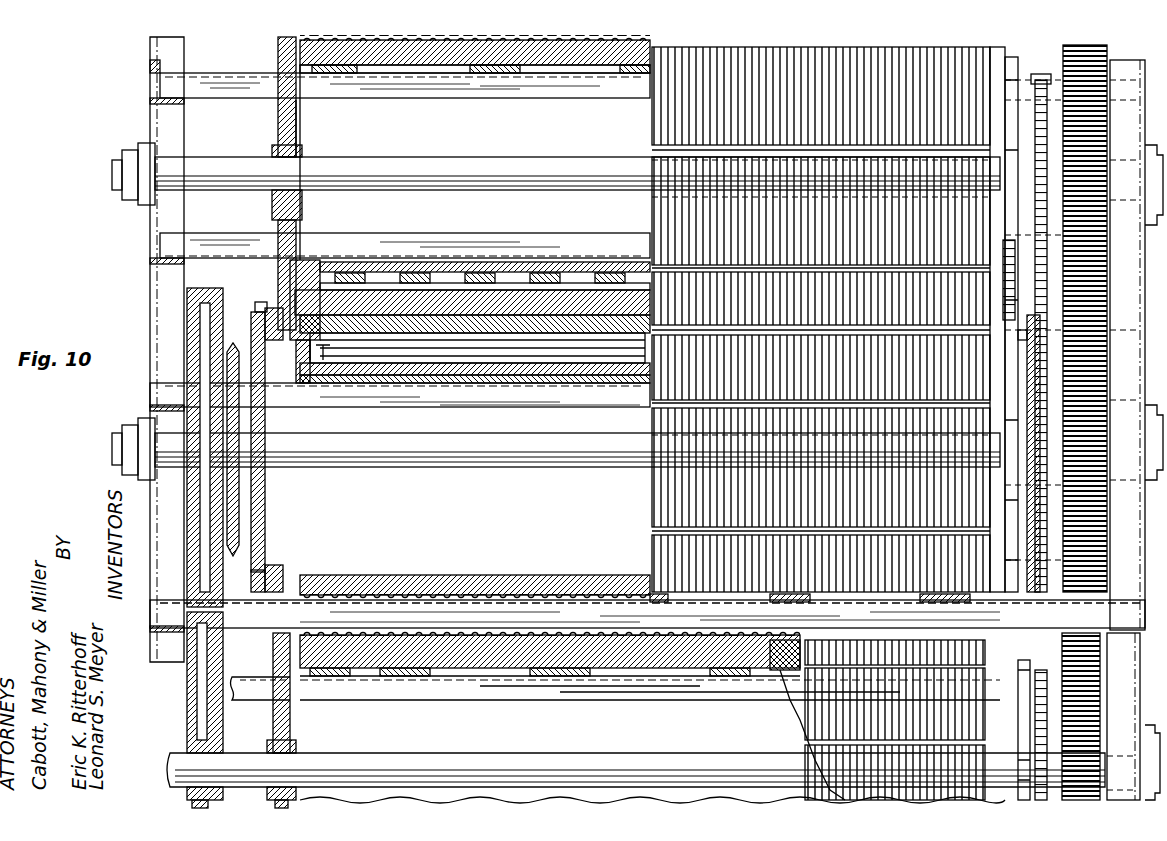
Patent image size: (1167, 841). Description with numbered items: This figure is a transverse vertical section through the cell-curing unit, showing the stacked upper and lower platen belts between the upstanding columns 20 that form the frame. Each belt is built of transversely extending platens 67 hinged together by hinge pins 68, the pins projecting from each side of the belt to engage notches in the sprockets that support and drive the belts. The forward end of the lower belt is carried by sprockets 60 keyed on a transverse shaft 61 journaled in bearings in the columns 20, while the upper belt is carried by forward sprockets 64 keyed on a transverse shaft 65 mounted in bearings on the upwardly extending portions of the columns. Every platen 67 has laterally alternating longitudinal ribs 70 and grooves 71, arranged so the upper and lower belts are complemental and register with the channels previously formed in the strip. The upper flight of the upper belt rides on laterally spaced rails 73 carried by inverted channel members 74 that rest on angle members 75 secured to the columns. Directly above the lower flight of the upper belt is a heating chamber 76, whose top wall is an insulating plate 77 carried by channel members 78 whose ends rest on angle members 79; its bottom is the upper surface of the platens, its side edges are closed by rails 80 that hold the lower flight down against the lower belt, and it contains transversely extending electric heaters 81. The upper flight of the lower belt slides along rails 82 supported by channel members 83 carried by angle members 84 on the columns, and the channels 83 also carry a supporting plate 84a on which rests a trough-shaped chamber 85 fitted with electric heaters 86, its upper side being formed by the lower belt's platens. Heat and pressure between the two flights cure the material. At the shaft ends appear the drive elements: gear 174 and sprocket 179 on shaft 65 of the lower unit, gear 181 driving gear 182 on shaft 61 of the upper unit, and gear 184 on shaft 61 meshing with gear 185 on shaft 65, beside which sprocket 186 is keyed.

The upstanding columns 20 is at (157, 288).
The sprockets 60 is at (265, 508).
The transverse shaft 61 is at (394, 467).
The forward sprockets 64 is at (278, 120).
The transverse shaft 65 is at (474, 172).
The platens 67 is at (588, 262).
The hinge pins 68 is at (268, 316).
The ribs 70 is at (420, 40).
The grooves 71 is at (498, 40).
The rails 73 is at (328, 72).
The inverted channel members 74 is at (390, 98).
The angle members 75 is at (170, 104).
The heating chamber 76 is at (492, 286).
The insulating plate 77 is at (446, 274).
The channel members 78 is at (370, 260).
The angle members 79 is at (150, 248).
The rails 80 is at (310, 260).
The electric heaters 81 is at (562, 262).
The rails 82 is at (332, 360).
The channel members 83 is at (392, 394).
The angle members 84 is at (150, 394).
The supporting plate 84a is at (528, 384).
The trough-shaped chamber 85 is at (428, 378).
The electric heaters 86 is at (462, 368).
The gear 174 is at (1098, 692).
The sprocket 179 is at (1038, 670).
The gear 181 is at (210, 646).
The gear 182 is at (216, 292).
The gear 184 is at (1098, 386).
The gear 185 is at (1094, 54).
The sprocket 186 is at (1040, 84).